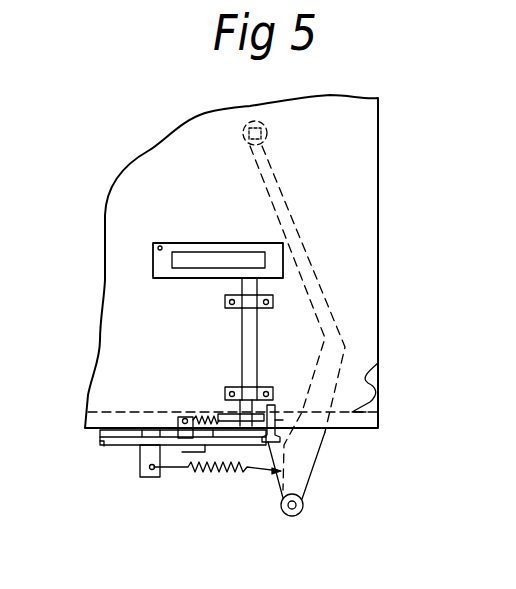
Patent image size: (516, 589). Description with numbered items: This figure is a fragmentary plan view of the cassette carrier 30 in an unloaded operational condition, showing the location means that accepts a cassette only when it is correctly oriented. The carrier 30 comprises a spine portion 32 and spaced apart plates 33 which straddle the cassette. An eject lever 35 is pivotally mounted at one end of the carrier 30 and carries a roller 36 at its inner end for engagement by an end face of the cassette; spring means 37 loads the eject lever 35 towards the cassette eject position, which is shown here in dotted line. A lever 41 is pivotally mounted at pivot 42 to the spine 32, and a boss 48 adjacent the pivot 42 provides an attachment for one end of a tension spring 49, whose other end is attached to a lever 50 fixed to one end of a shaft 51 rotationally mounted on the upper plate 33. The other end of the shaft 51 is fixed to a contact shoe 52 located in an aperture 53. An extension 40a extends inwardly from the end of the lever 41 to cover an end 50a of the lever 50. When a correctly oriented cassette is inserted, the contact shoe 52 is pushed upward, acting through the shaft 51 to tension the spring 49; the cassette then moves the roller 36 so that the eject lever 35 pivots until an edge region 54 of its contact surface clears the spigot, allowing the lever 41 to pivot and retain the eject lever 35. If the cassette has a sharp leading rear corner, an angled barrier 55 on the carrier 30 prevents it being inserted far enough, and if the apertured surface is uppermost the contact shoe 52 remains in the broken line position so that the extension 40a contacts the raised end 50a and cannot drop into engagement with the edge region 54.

The cassette carrier 30 is at (84, 195).
The spine portion 32 is at (380, 428).
The plate 33 is at (157, 162).
The eject lever 35 is at (287, 207).
The roller 36 is at (268, 136).
The spring means 37 is at (218, 474).
The extension 40a is at (287, 443).
The lever 41 is at (112, 445).
The pivot 42 is at (184, 456).
The boss 48 is at (181, 423).
The tension spring 49 is at (212, 412).
The lever 50 is at (255, 390).
The end of lever 50 50a is at (276, 432).
The shaft 51 is at (248, 345).
The contact shoe 52 is at (220, 258).
The aperture 53 is at (166, 243).
The edge region 54 is at (272, 482).
The angled barrier 55 is at (380, 365).